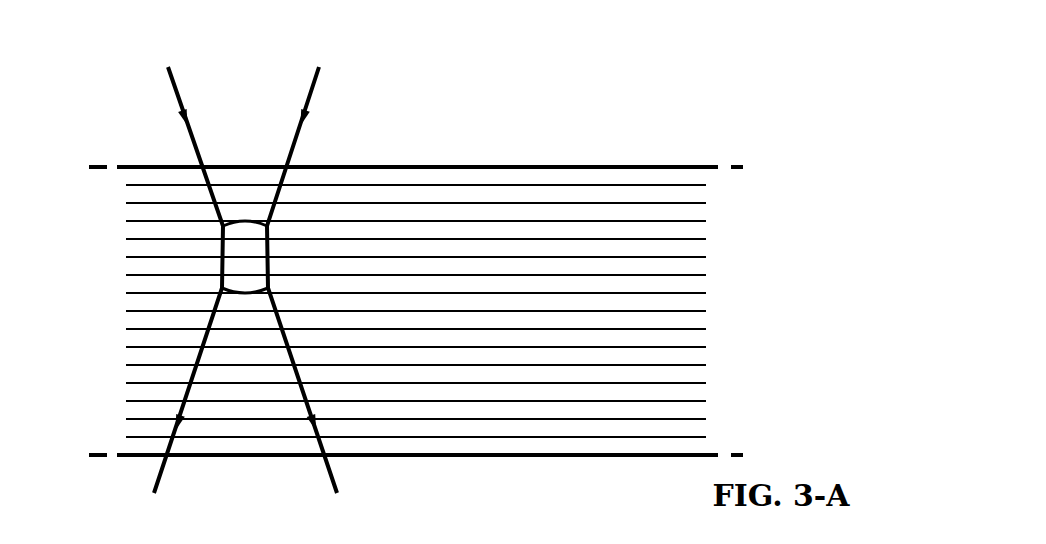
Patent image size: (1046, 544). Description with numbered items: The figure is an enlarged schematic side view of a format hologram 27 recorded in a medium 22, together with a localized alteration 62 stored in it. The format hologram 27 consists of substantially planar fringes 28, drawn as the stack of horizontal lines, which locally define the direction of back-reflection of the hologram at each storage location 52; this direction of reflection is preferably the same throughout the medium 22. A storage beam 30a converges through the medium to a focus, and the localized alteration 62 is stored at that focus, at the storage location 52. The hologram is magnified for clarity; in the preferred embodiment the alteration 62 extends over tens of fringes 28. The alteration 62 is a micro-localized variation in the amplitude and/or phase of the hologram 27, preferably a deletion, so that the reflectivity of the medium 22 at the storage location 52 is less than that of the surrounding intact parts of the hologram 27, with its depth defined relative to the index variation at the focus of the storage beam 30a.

The medium 22 is at (658, 163).
The format hologram 27 is at (677, 319).
The fringes 28 is at (695, 273).
The storage beam 30a is at (317, 86).
The storage location 52 is at (245, 258).
The localized alteration 62 is at (220, 248).